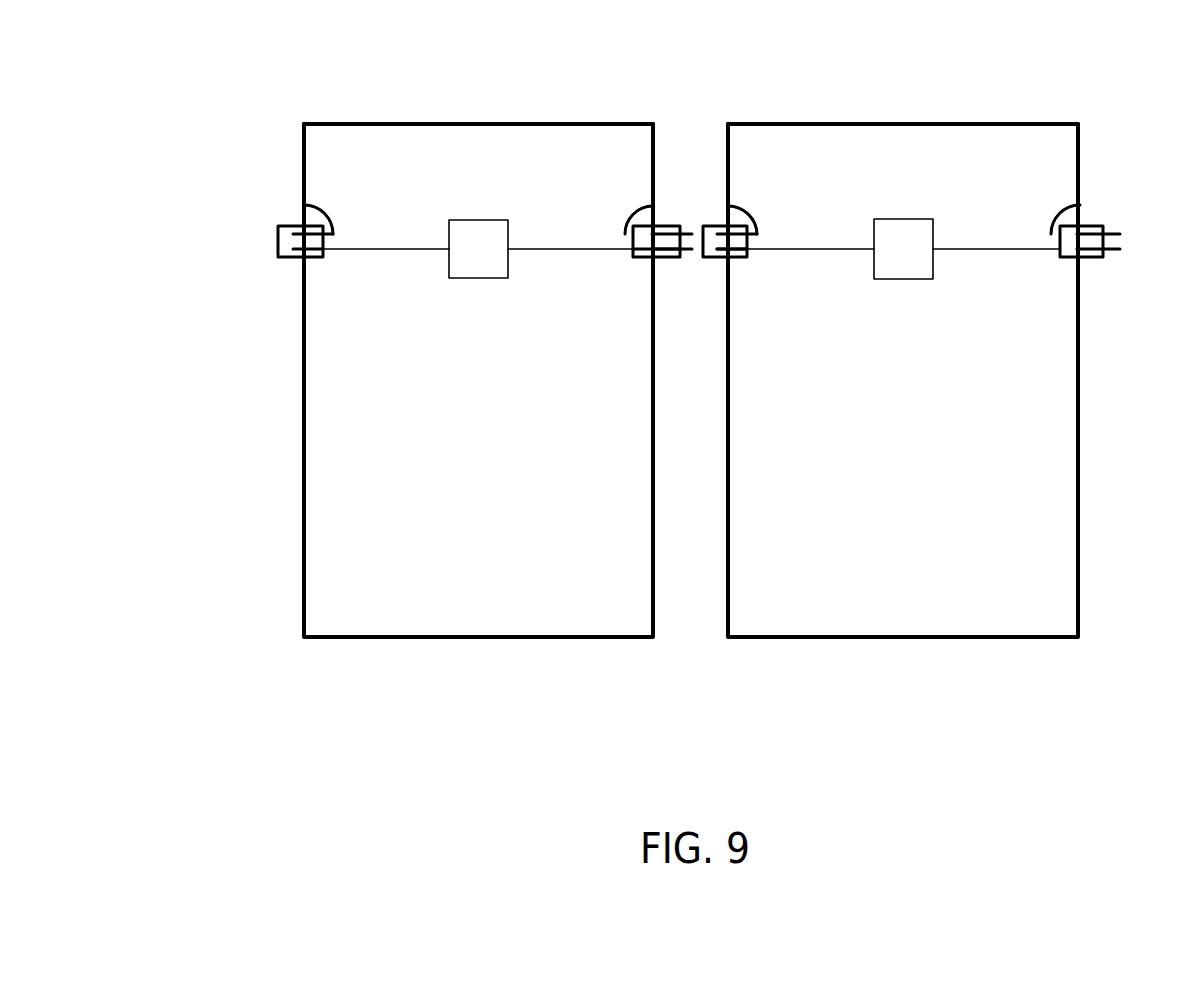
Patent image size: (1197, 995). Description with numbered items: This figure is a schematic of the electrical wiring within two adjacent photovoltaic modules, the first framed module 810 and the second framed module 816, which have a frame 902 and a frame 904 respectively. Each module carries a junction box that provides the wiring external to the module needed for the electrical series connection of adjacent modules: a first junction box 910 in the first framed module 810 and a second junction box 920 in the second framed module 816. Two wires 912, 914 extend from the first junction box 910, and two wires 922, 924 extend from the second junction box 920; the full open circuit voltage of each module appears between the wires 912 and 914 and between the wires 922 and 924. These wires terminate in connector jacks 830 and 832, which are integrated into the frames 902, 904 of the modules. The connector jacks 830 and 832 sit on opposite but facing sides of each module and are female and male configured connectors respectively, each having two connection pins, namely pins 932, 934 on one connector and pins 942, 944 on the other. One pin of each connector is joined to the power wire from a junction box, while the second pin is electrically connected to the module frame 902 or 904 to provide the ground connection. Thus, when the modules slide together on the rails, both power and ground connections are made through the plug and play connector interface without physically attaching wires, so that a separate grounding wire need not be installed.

The first framed module 810 is at (922, 123).
The second framed module 816 is at (457, 123).
The connector jack 830 is at (710, 230).
The connector jack 832 is at (668, 258).
The frame 902 is at (303, 498).
The frame 904 is at (1080, 498).
The first junction box 910 is at (497, 267).
The wire 912 is at (532, 248).
The wire 914 is at (397, 248).
The second junction box 920 is at (925, 268).
The wire 922 is at (960, 248).
The wire 924 is at (820, 248).
The connection pin 932 is at (733, 233).
The connection pin 934 is at (735, 258).
The connection pin 942 is at (645, 233).
The connection pin 944 is at (643, 258).